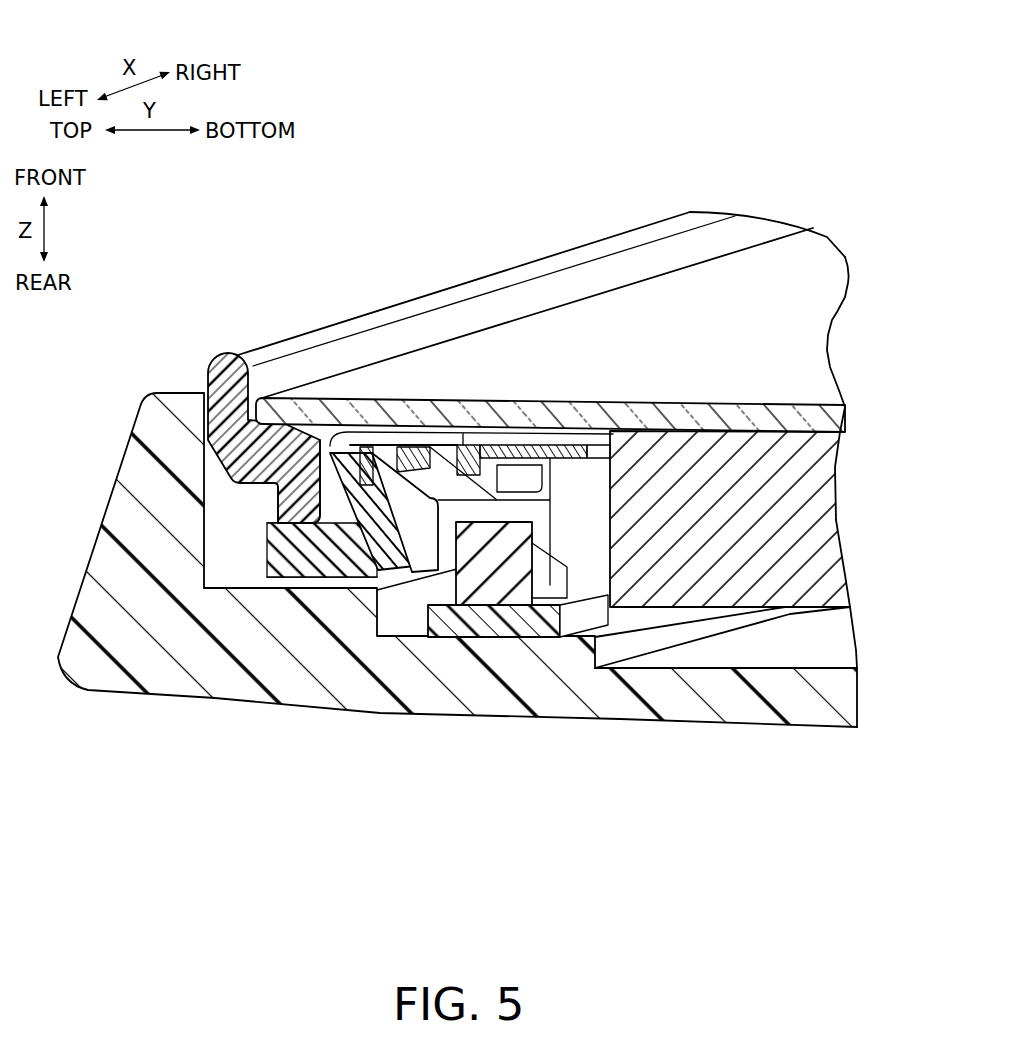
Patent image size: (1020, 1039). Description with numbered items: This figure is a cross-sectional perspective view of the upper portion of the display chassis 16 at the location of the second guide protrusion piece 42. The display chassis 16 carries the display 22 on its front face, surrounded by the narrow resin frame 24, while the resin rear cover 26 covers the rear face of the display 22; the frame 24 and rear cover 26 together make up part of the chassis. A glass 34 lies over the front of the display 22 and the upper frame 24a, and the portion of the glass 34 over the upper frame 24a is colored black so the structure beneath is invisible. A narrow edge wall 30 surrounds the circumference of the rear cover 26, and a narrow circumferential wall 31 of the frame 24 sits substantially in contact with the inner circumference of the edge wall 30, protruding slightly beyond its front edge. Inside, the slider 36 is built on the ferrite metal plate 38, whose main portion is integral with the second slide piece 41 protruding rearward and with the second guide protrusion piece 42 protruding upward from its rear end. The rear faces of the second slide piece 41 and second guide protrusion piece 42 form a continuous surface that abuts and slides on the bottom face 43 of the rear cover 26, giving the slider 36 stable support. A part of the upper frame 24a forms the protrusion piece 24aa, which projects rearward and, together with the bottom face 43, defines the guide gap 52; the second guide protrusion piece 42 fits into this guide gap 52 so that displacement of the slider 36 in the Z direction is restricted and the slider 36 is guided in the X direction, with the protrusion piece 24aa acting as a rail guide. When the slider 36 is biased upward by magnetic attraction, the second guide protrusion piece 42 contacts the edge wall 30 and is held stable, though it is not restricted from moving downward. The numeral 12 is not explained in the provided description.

The apparatus body 12 is at (126, 349).
The display chassis 16 is at (763, 150).
The display 22 is at (830, 558).
The frame 24 is at (655, 222).
The upper frame 24a is at (655, 222).
The protrusion piece 24aa is at (295, 503).
The rear cover 26 is at (737, 700).
The edge wall 30 is at (182, 385).
The circumferential wall 31 is at (590, 258).
The glass 34 is at (817, 327).
The slider 36 is at (500, 470).
The metal plate 38 is at (500, 470).
The second slide piece 41 is at (380, 556).
The second guide protrusion piece 42 is at (284, 575).
The bottom face 43 is at (327, 585).
The guide gap 52 is at (325, 585).